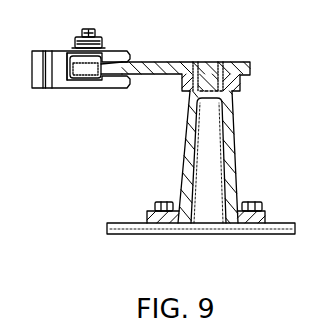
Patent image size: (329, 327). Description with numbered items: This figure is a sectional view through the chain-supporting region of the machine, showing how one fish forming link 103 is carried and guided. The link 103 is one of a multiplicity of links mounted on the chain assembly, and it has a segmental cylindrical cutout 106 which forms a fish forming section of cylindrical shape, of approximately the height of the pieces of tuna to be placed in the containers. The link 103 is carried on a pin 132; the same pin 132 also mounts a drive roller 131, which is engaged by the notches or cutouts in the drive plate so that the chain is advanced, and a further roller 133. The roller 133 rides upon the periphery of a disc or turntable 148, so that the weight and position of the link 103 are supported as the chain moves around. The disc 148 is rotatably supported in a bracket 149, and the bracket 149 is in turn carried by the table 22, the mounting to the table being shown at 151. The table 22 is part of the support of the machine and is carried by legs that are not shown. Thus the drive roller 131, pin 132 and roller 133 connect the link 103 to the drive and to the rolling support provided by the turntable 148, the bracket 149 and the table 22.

The table 22 is at (129, 230).
The link 103 is at (58, 57).
The segmental cylindrical cutout 106 is at (38, 78).
The drive roller 131 is at (105, 43).
The pin 132 is at (95, 29).
The roller 133 is at (82, 72).
The disc 148 is at (172, 62).
The bracket 149 is at (182, 145).
The bracket mounting 151 is at (267, 205).